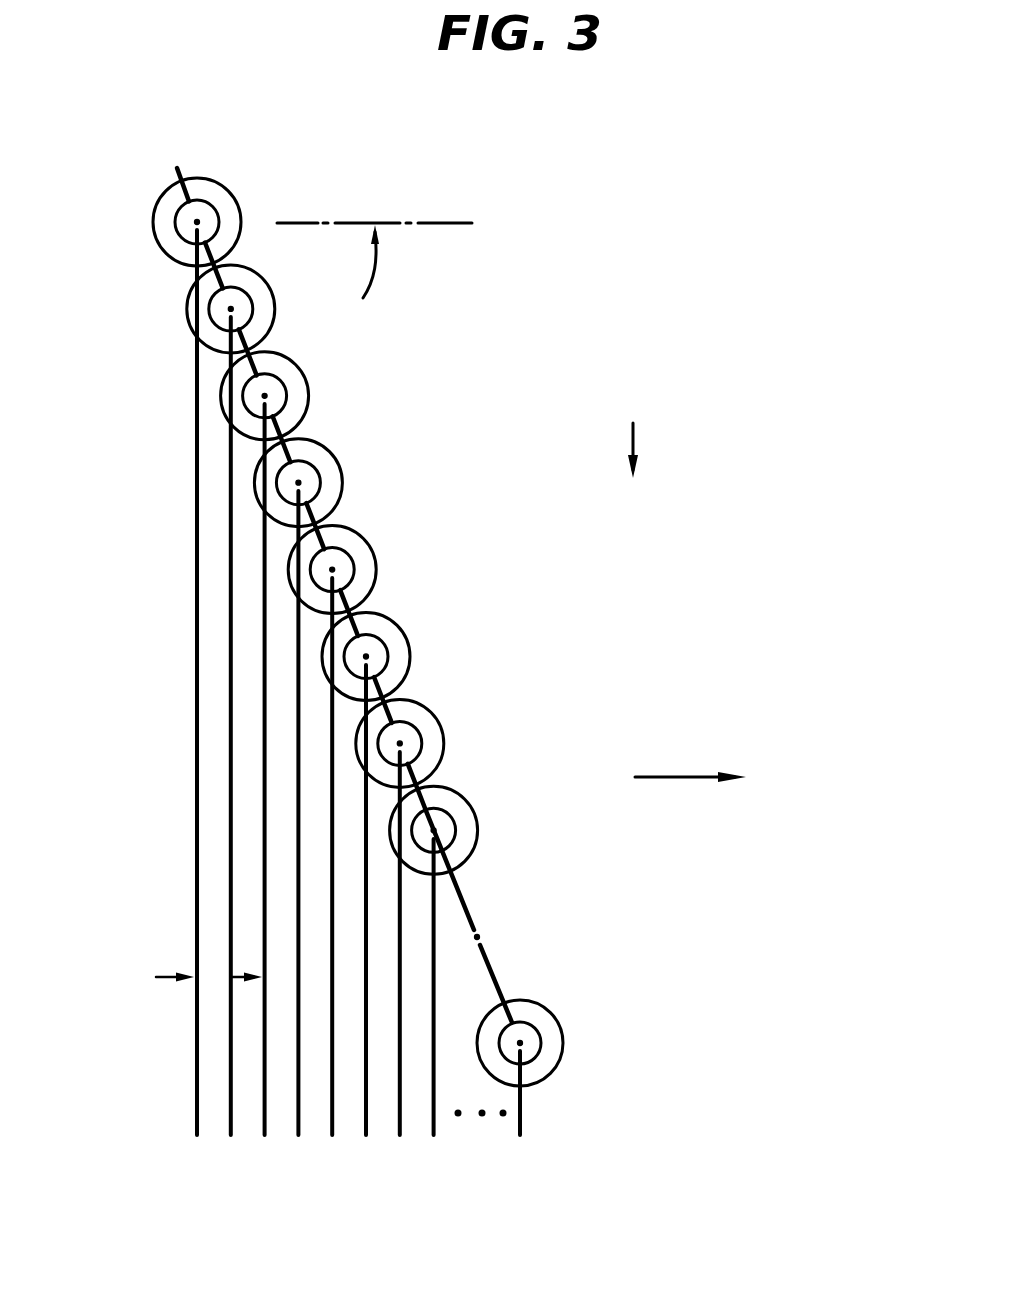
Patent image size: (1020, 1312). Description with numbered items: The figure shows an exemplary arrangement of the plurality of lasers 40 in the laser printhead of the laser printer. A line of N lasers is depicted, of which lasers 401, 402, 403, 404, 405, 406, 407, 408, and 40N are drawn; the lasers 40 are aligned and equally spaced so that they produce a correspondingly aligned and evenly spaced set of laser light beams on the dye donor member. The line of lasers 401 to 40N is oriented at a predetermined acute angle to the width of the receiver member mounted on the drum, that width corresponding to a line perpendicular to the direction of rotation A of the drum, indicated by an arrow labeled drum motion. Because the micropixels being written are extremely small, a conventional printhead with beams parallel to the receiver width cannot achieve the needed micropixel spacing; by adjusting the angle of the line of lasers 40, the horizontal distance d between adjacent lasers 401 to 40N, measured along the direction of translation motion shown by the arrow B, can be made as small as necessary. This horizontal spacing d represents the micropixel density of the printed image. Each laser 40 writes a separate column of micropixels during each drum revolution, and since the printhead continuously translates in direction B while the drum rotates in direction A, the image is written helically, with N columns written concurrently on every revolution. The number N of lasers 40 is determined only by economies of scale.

The lasers 40 is at (364, 628).
The first laser 401 is at (177, 188).
The second laser 402 is at (192, 287).
The third laser 403 is at (298, 362).
The fourth laser 404 is at (332, 448).
The fifth laser 405 is at (367, 540).
The sixth laser 406 is at (400, 627).
The seventh laser 407 is at (435, 712).
The eighth laser 408 is at (467, 797).
The Nth laser 40N is at (543, 1008).
The direction of rotation of the drum A is at (635, 435).
The direction of translation motion B is at (690, 778).
The horizontal distance between lasers d is at (199, 977).